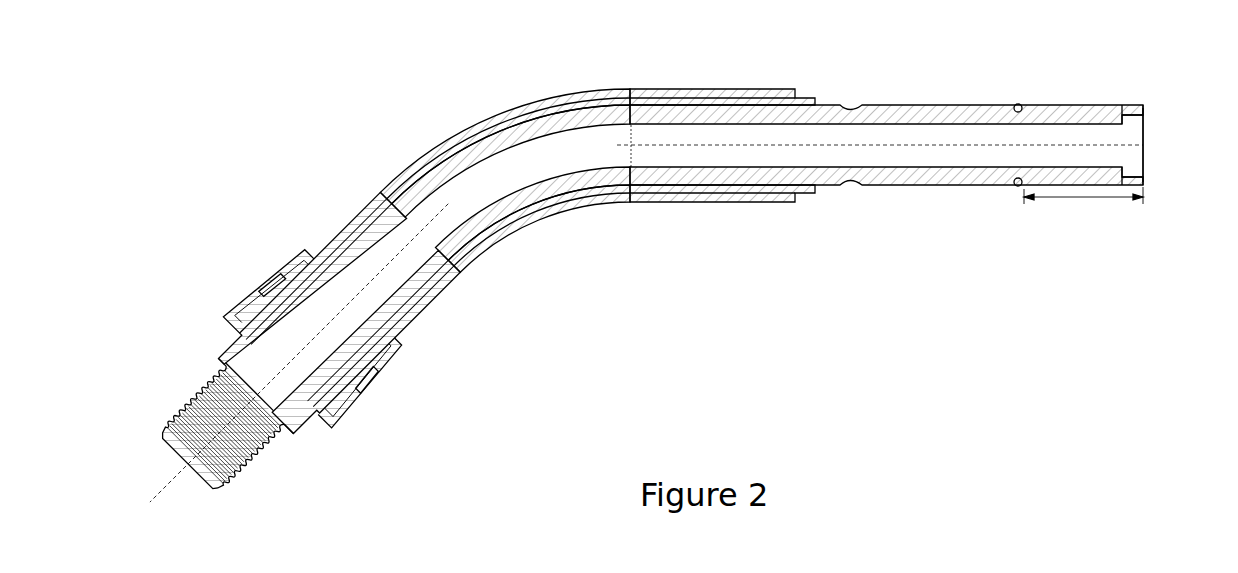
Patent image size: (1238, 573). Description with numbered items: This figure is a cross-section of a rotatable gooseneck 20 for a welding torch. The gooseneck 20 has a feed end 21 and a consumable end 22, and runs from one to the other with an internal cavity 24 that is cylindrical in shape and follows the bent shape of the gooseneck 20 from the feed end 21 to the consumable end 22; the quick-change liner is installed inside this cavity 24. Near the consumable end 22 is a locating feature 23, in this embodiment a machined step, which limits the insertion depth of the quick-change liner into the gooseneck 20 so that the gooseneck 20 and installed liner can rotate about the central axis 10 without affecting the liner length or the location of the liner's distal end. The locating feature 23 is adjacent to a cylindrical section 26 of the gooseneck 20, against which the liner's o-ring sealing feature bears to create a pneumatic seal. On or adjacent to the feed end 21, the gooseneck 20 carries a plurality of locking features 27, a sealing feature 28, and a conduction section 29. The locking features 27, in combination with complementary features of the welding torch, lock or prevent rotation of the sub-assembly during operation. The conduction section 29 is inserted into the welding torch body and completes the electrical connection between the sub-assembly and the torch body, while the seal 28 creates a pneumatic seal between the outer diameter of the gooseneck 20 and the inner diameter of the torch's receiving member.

The central axis 10 is at (1147, 146).
The gooseneck 20 is at (507, 85).
The feed end 21 is at (1100, 76).
The consumable end 22 is at (186, 355).
The locating feature 23 is at (1128, 121).
The internal cavity 24 is at (802, 98).
The cylindrical section 26 is at (1133, 104).
The locking features 27 is at (852, 190).
The sealing feature 28 is at (1018, 104).
The conduction section 29 is at (1083, 206).